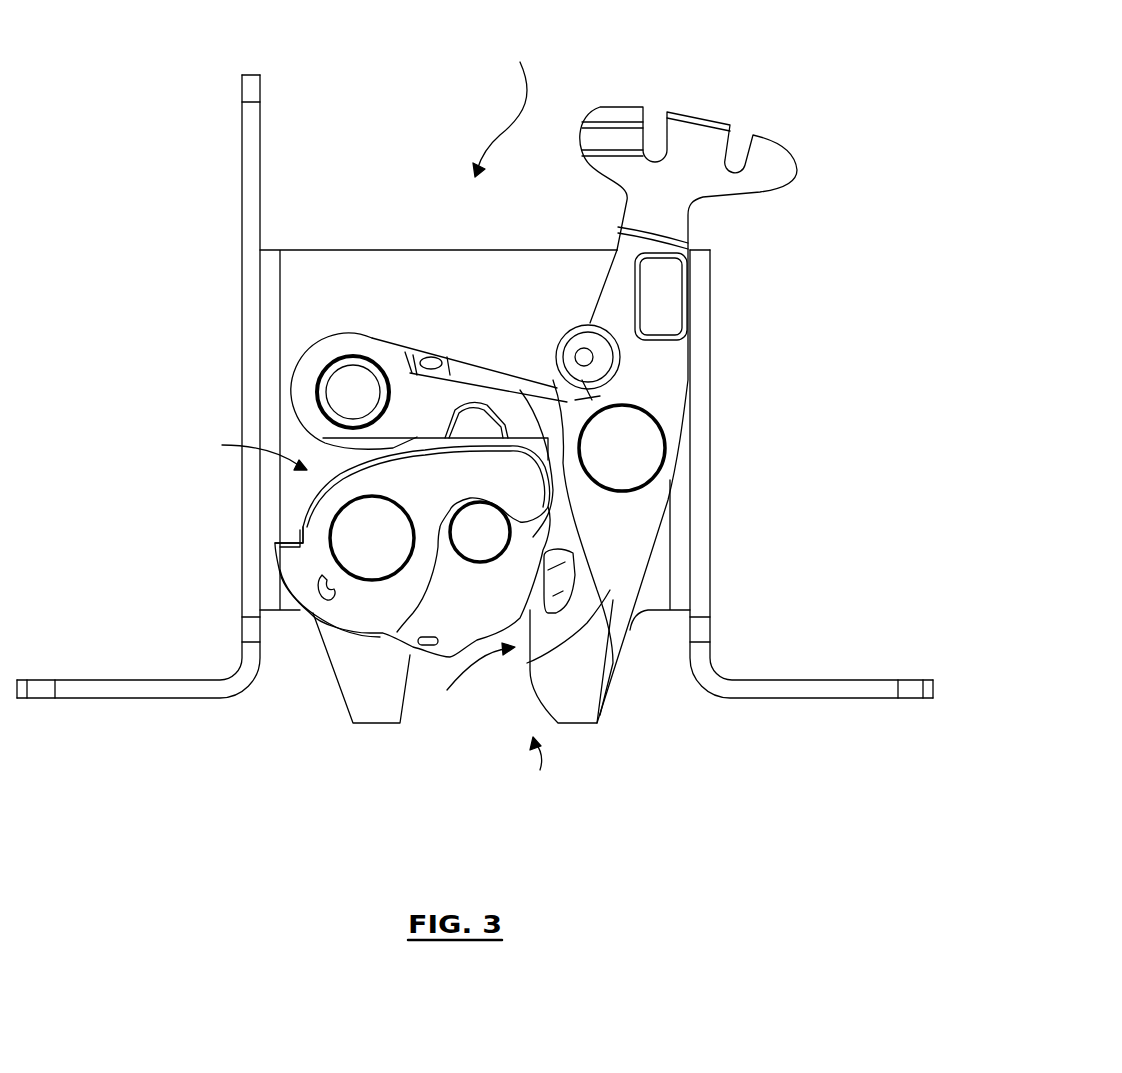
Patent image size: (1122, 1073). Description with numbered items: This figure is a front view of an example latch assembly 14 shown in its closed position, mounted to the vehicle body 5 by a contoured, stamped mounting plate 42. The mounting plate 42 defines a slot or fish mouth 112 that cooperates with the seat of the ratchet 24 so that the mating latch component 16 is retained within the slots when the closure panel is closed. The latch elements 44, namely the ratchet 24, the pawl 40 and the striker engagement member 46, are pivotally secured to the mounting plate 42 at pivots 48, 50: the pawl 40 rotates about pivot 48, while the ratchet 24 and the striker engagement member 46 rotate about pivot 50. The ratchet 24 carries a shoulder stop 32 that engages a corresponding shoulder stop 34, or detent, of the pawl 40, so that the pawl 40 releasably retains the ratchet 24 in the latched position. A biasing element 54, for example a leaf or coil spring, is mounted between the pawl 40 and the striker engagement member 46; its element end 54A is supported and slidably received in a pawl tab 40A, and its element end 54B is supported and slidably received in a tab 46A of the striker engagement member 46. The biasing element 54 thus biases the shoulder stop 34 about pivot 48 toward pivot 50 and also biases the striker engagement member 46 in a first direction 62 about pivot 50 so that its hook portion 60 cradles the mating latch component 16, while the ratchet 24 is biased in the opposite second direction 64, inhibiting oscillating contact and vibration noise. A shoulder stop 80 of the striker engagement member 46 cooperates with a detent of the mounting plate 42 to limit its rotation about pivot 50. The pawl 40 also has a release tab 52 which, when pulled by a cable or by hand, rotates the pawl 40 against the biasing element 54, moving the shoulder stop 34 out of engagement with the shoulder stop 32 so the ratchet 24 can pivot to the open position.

The vehicle body 5 is at (867, 680).
The latch assembly 14 is at (505, 104).
The mating latch component 16 is at (494, 546).
The ratchet 24 is at (401, 658).
The shoulder stop 32 is at (613, 663).
The shoulder stop 34 is at (571, 577).
The pawl 40 is at (660, 357).
The pawl tab 40A is at (578, 345).
The mounting plate 42 is at (337, 265).
The latch elements 44 is at (247, 444).
The striker engagement member 46 is at (285, 580).
The tab 46A is at (567, 470).
The pivot 48 is at (636, 462).
The pivot 50 is at (386, 552).
The release tab 52 is at (778, 152).
The biasing element 54 is at (466, 362).
The element end 54A is at (598, 395).
The element end 54B is at (521, 370).
The hook portion 60 is at (585, 490).
The first direction 62 is at (331, 465).
The second direction 64 is at (473, 687).
The shoulder stop 80 is at (285, 540).
The slot 112 is at (540, 770).